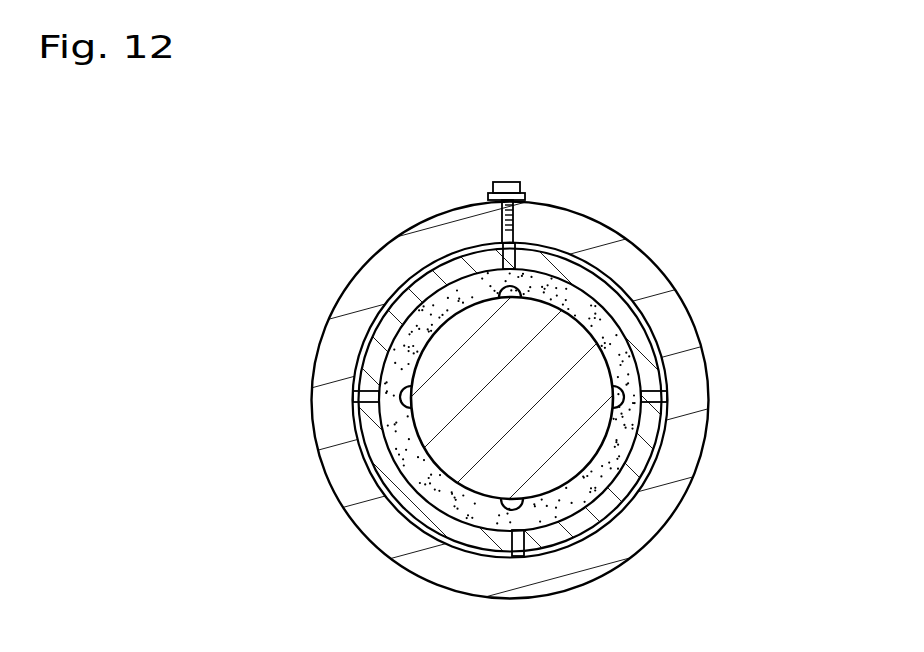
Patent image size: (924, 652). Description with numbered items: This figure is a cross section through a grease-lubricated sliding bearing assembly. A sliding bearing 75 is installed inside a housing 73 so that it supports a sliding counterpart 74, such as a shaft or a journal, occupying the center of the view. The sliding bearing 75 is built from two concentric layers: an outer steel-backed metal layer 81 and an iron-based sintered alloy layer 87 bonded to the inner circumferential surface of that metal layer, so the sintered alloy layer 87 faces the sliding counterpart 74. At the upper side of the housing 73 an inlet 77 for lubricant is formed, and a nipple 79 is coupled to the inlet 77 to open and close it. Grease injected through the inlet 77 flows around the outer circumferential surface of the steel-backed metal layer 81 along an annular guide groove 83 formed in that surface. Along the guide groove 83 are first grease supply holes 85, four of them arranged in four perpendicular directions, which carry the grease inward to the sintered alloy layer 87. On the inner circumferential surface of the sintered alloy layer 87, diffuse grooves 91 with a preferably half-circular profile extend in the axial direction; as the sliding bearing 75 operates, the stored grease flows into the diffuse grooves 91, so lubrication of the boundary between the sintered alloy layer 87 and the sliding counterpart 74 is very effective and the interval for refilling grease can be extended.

The housing 73 is at (673, 297).
The sliding counterpart 74 is at (425, 358).
The sliding bearing 75 is at (601, 526).
The inlet 77 is at (518, 209).
The nipple 79 is at (503, 182).
The steel-backed metal layer 81 is at (615, 290).
The guide groove 83 is at (584, 260).
The first grease supply holes 85 is at (503, 258).
The sintered alloy layer 87 is at (618, 447).
The diffuse grooves 91 is at (515, 294).